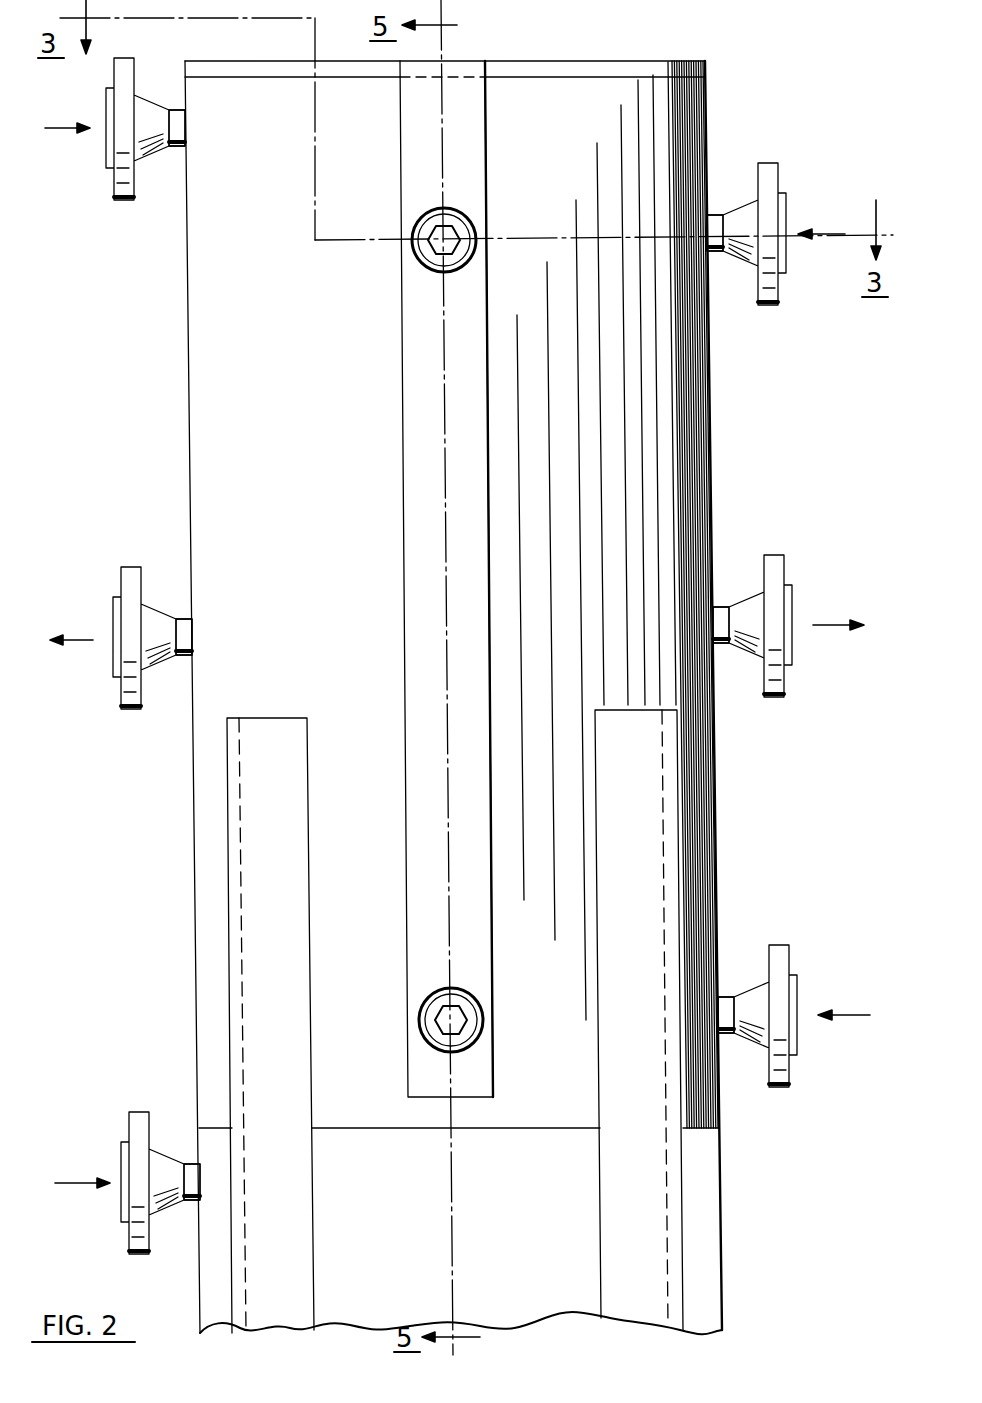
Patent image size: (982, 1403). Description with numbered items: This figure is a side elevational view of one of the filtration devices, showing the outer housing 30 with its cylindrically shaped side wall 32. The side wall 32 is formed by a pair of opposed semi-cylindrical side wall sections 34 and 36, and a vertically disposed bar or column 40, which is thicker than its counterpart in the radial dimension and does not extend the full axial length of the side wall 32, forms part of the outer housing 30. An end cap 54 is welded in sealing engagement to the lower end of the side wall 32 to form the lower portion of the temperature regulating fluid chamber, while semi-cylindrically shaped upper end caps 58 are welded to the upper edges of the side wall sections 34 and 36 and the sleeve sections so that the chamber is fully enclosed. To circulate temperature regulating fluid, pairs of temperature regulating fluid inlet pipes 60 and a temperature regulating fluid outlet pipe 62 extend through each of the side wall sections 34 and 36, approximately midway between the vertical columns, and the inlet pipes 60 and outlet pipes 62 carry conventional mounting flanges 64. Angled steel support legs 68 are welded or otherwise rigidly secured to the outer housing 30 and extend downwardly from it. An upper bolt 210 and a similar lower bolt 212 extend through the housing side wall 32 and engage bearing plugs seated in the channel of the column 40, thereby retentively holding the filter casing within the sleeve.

The outer housing 30 is at (740, 88).
The cylindrically shaped side wall 32 is at (712, 510).
The semi-cylindrical side wall section 34 is at (698, 408).
The semi-cylindrical side wall section 36 is at (228, 400).
The vertically disposed bar or column 40 is at (428, 635).
The end cap 54 is at (543, 1293).
The semi-cylindrically shaped upper end cap 58 is at (258, 70).
The temperature regulating fluid inlet pipe 60 is at (178, 148).
The temperature regulating fluid outlet pipe 62 is at (185, 617).
The mounting flange 64 is at (118, 203).
The angled steel support leg 68 is at (293, 1200).
The upper bolt 210 is at (425, 252).
The bolt 212 is at (440, 1012).